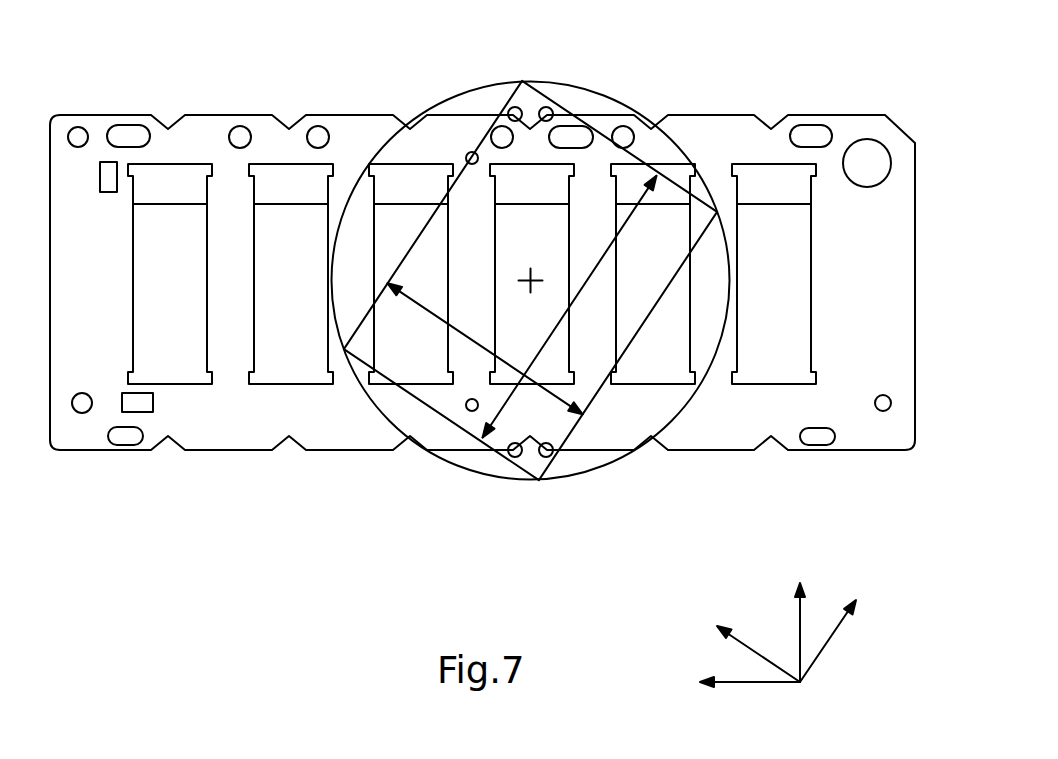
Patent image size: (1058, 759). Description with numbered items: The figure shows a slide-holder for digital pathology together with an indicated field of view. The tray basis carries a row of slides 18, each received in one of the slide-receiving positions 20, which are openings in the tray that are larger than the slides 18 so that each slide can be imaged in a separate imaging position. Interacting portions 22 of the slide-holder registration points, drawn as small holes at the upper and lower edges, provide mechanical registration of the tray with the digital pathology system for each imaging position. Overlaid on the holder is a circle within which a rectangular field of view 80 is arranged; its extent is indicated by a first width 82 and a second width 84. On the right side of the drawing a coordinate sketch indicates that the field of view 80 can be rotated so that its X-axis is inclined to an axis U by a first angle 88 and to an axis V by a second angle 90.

The slide 18 is at (278, 371).
The slide-receiving position 20 is at (250, 358).
The interacting portion 22 is at (530, 120).
The field of view 80 is at (475, 425).
The first width 82 is at (435, 306).
The second width 84 is at (642, 195).
The first angle 88 is at (825, 607).
The second angle 90 is at (772, 600).